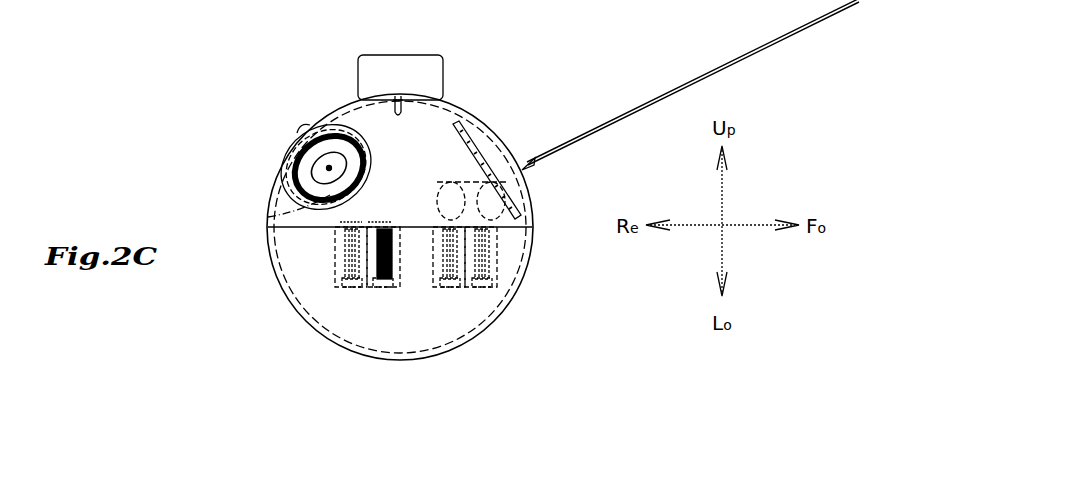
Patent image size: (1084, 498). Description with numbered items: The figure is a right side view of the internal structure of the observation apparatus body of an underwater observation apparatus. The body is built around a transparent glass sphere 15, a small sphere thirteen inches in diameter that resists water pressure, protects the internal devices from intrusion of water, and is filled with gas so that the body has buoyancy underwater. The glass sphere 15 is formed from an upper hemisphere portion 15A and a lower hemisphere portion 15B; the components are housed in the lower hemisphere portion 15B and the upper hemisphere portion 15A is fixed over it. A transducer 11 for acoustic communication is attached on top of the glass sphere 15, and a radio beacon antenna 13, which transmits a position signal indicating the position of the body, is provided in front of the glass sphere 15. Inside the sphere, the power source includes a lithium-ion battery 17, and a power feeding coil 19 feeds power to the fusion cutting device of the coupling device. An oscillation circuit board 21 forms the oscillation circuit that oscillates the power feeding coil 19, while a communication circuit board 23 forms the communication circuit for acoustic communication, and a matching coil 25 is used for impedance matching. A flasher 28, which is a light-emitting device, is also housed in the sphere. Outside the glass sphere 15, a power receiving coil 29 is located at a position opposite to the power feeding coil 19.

The transducer 11 is at (444, 70).
The radio beacon antenna 13 is at (779, 42).
The glass sphere 15 is at (528, 188).
The upper hemisphere portion 15A is at (440, 117).
The lower hemisphere portion 15B is at (510, 262).
The lithium-ion battery 17 is at (357, 288).
The power feeding coil 19 is at (296, 208).
The oscillation circuit board 21 is at (322, 224).
The communication circuit board 23 is at (370, 221).
The matching coil 25 is at (450, 181).
The flasher 28 is at (493, 142).
The power receiving coil 29 is at (294, 157).